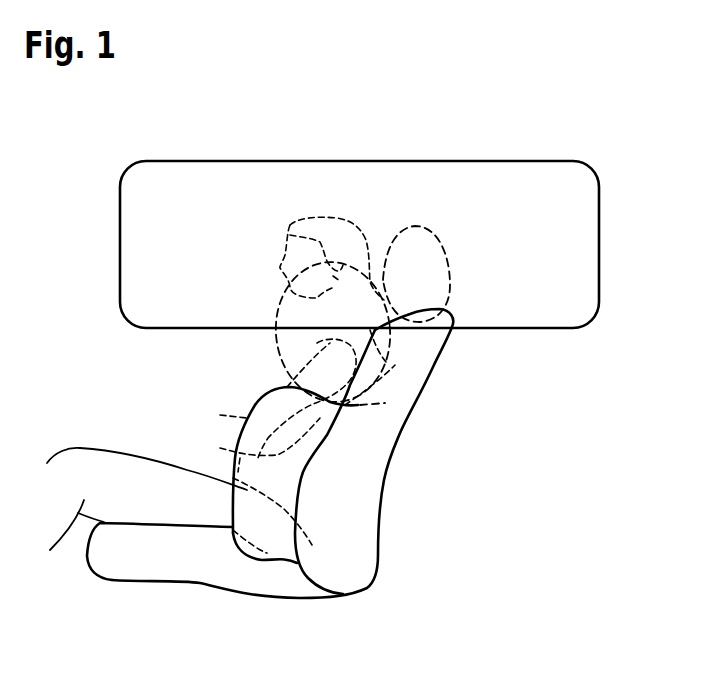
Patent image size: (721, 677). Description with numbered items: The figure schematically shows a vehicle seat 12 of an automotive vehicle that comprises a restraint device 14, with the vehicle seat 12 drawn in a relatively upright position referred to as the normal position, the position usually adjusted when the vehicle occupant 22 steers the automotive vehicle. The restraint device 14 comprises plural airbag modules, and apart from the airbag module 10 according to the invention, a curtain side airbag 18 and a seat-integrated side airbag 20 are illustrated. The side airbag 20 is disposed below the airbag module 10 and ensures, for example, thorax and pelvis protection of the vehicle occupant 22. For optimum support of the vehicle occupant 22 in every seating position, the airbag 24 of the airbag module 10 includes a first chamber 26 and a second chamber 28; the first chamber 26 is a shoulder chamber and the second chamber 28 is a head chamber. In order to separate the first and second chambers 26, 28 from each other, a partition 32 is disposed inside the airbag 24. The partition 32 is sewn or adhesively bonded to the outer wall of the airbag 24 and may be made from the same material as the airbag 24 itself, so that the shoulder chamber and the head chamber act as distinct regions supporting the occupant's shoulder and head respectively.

The airbag module 10 is at (270, 312).
The vehicle seat 12 is at (372, 462).
The restraint device 14 is at (597, 128).
The curtain side airbag 18 is at (400, 179).
The seat-integrated side airbag 20 is at (235, 482).
The vehicle occupant 22 is at (142, 497).
The airbag 24 is at (292, 352).
The first chamber 26 is at (381, 352).
The second chamber 28 is at (350, 297).
The partition 32 is at (363, 353).